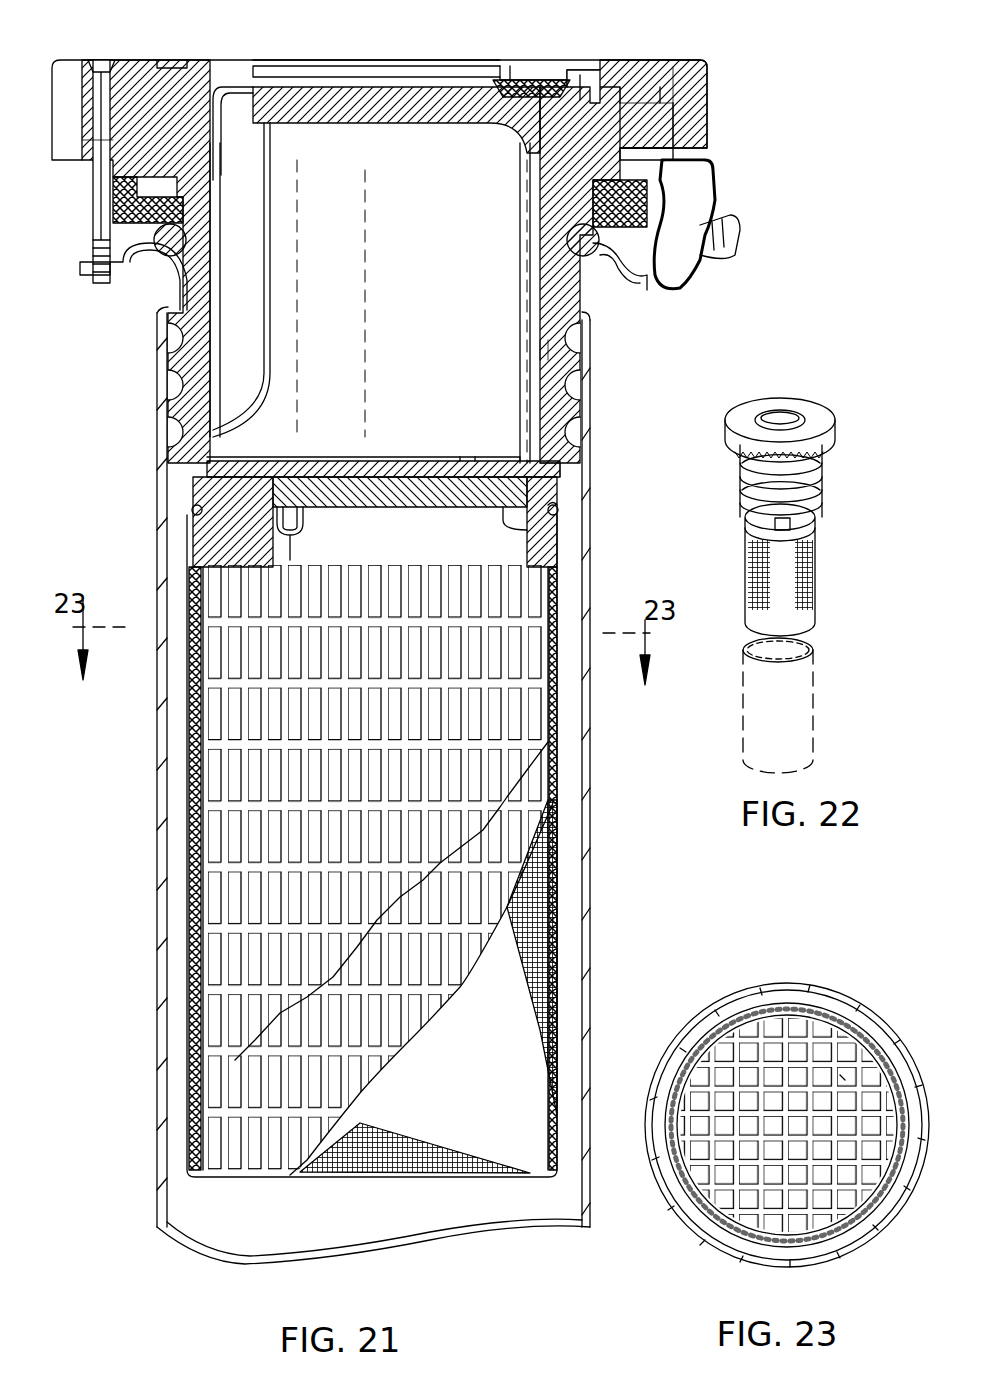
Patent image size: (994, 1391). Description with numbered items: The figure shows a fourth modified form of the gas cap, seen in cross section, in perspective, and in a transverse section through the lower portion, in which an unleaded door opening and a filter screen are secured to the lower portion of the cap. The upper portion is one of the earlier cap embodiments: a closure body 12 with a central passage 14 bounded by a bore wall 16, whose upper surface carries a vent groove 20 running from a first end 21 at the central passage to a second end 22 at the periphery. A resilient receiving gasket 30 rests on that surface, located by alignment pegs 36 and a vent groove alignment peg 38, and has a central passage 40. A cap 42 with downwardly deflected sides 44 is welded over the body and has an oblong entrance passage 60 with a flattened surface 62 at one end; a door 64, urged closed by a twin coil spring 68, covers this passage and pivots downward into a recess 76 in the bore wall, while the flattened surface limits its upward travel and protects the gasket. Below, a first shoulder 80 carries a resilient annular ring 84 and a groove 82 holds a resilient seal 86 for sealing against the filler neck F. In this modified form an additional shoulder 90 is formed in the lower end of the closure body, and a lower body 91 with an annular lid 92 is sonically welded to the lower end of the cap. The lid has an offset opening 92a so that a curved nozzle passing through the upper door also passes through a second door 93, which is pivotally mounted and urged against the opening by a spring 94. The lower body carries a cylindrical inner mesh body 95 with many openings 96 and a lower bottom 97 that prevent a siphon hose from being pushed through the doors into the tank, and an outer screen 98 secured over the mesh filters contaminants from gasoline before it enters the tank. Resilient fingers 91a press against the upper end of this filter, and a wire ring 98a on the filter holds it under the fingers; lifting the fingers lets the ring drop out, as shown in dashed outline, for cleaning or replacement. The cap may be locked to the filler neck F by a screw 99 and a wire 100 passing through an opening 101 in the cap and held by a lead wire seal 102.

In FIG. 21, the closure body 12 is at (585, 312).
In FIG. 22, the closure body 12 is at (838, 462).
In FIG. 21, the central passage 14 is at (530, 400).
In FIG. 21, the bore wall 16 is at (540, 350).
In FIG. 21, the vent groove 20 is at (640, 72).
In FIG. 21, the first end 21 is at (540, 120).
In FIG. 21, the second end 22 is at (705, 68).
In FIG. 21, the receiving gasket 30 is at (500, 80).
In FIG. 21, the alignment pegs 36 is at (170, 72).
In FIG. 21, the vent groove alignment peg 38 is at (580, 75).
In FIG. 21, the central passage 40 is at (400, 77).
In FIG. 21, the cap 42 is at (612, 62).
In FIG. 22, the cap 42 is at (792, 405).
In FIG. 21, the downwardly deflected sides 44 is at (705, 115).
In FIG. 21, the entrance passage 60 is at (302, 60).
In FIG. 21, the flattened surface 62 is at (512, 70).
In FIG. 21, the door 64 is at (373, 125).
In FIG. 22, the door 64 is at (795, 422).
In FIG. 21, the twin coil spring 68 is at (250, 130).
In FIG. 21, the recess 76 is at (255, 300).
In FIG. 21, the first shoulder 80 is at (105, 165).
In FIG. 21, the groove 82 is at (185, 225).
In FIG. 21, the resilient annular ring 84 is at (125, 203).
In FIG. 21, the resilient seal 86 is at (160, 270).
In FIG. 21, the additional shoulder 90 is at (555, 470).
In FIG. 21, the lower body 91 is at (548, 565).
In FIG. 21, the fingers 91a is at (190, 512).
In FIG. 22, the fingers 91a is at (805, 520).
In FIG. 21, the annular lid 92 is at (310, 460).
In FIG. 21, the opening 92a is at (467, 460).
In FIG. 21, the door 93 is at (390, 477).
In FIG. 21, the spring 94 is at (305, 520).
In FIG. 21, the inner mesh body 95 is at (560, 740).
In FIG. 23, the inner mesh body 95 is at (817, 998).
In FIG. 21, the openings 96 is at (490, 715).
In FIG. 23, the openings 96 is at (775, 1080).
In FIG. 21, the lower bottom 97 is at (270, 1185).
In FIG. 23, the lower bottom 97 is at (845, 1080).
In FIG. 21, the outer screen 98 is at (560, 550).
In FIG. 22, the outer screen 98 is at (800, 648).
In FIG. 23, the outer screen 98 is at (700, 1050).
In FIG. 21, the wire ring 98a is at (560, 510).
In FIG. 22, the wire ring 98a is at (765, 530).
In FIG. 21, the screw 99 is at (103, 62).
In FIG. 21, the wire 100 is at (690, 265).
In FIG. 21, the opening 101 is at (700, 160).
In FIG. 21, the lead wire seal 102 is at (735, 235).
In FIG. 21, the filler neck F is at (157, 400).
In FIG. 23, the filler neck F is at (860, 1000).